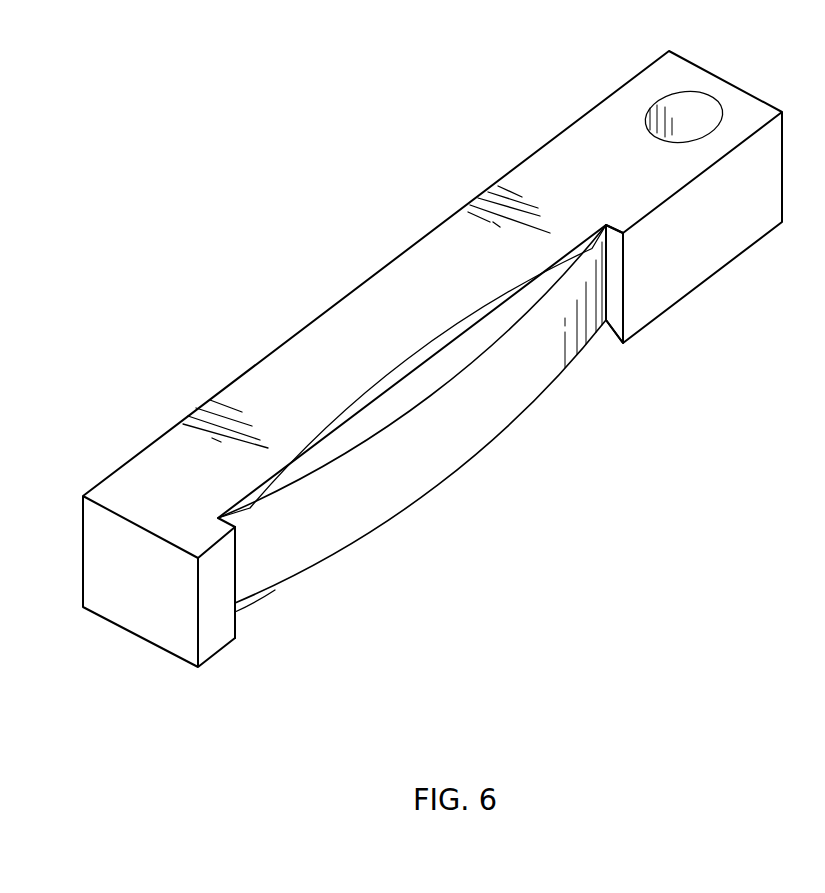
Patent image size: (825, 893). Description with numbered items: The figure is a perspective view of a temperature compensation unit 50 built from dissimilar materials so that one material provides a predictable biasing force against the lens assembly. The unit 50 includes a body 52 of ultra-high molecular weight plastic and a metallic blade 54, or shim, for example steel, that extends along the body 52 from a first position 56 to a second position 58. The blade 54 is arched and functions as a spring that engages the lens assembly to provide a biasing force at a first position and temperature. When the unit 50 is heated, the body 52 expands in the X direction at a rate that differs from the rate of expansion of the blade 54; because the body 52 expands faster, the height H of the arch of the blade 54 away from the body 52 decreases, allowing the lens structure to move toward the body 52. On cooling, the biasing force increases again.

The temperature compensation unit 50 is at (268, 200).
The body 52 is at (572, 158).
The blade 54 is at (470, 440).
The first position 56 is at (277, 600).
The second position 58 is at (603, 355).
The height H is at (447, 390).
The X direction X is at (193, 322).